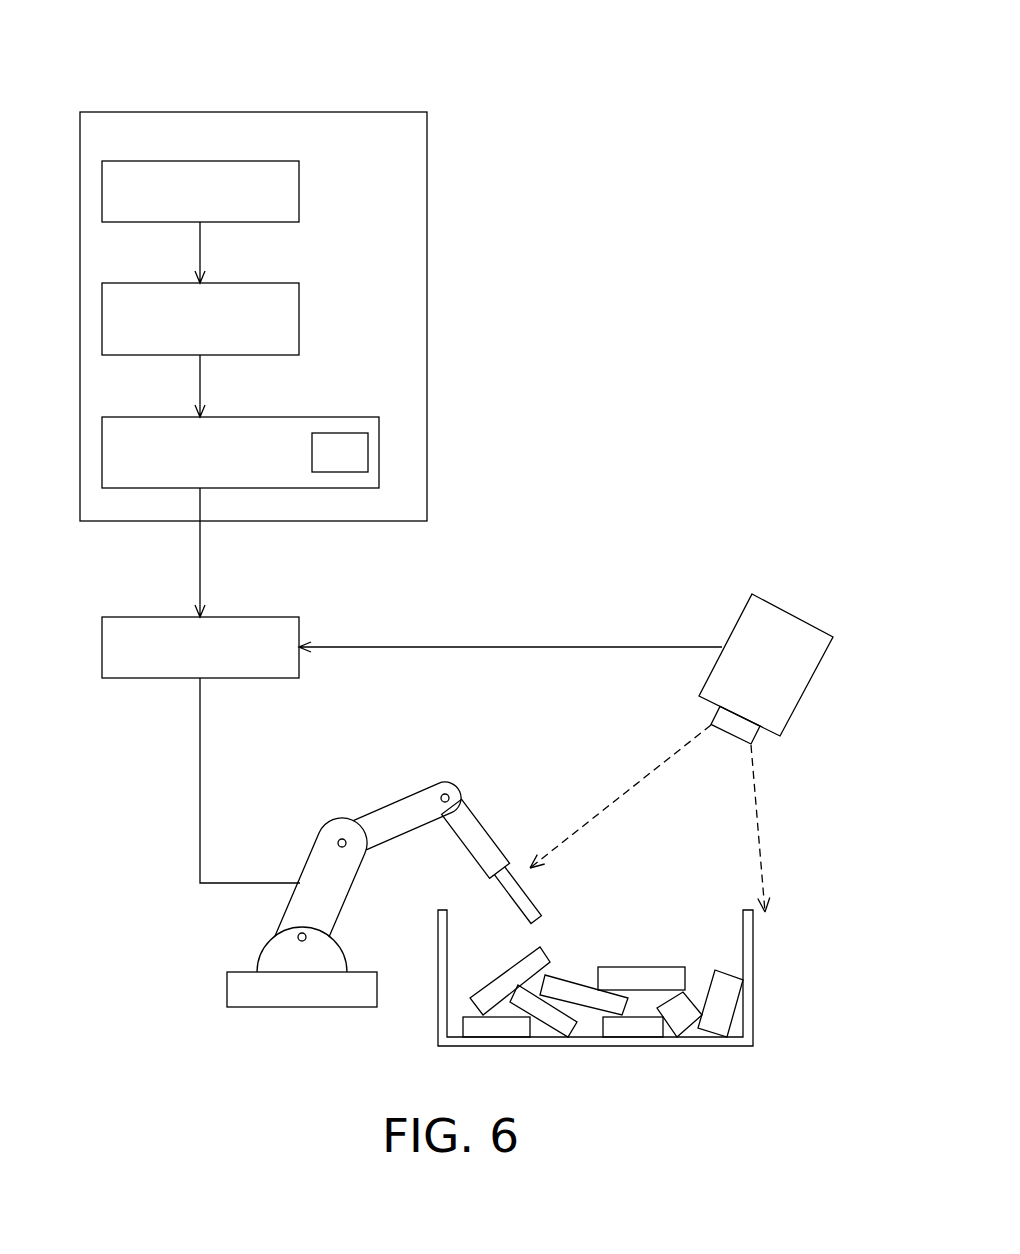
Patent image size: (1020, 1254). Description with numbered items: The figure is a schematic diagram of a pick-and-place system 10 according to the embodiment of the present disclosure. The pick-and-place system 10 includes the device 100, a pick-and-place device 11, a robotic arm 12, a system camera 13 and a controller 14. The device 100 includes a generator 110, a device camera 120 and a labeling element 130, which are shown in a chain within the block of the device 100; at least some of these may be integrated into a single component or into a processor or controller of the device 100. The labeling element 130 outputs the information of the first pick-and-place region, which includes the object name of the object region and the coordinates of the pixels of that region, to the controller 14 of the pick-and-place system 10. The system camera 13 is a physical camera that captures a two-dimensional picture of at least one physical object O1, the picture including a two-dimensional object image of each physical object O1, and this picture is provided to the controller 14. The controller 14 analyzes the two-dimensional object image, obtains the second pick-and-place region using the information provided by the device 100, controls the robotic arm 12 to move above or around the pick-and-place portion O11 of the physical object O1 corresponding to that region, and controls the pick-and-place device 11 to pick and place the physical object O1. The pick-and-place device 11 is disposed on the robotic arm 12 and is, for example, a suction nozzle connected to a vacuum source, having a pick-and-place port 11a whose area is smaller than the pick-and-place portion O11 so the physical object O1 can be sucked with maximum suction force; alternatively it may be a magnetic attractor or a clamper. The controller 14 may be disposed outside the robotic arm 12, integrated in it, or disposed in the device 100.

The pick-and-place system 10 is at (522, 80).
The device 100 is at (212, 147).
The generator 110 is at (279, 206).
The device camera 120 is at (179, 348).
The labeling element 130 is at (187, 479).
The controller 14 is at (270, 663).
The system camera 13 is at (785, 633).
The robotic arm 12 is at (305, 905).
The pick-and-place device 11 is at (526, 890).
The pick-and-place port 11a is at (540, 925).
The pick-and-place portion O11 is at (577, 980).
The physical object O1 is at (673, 970).